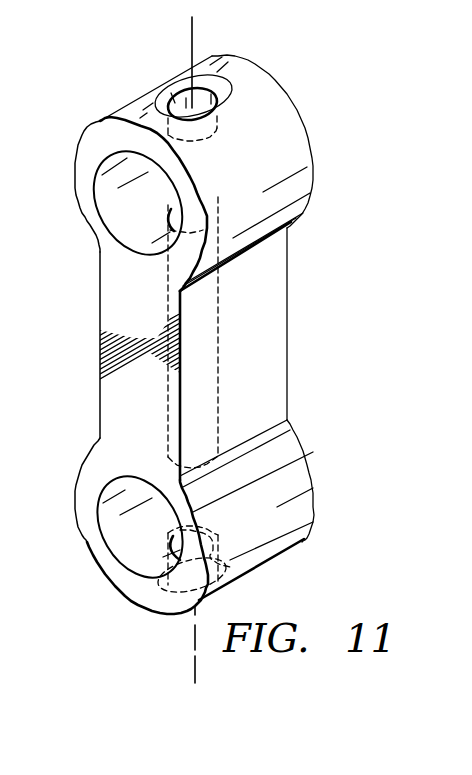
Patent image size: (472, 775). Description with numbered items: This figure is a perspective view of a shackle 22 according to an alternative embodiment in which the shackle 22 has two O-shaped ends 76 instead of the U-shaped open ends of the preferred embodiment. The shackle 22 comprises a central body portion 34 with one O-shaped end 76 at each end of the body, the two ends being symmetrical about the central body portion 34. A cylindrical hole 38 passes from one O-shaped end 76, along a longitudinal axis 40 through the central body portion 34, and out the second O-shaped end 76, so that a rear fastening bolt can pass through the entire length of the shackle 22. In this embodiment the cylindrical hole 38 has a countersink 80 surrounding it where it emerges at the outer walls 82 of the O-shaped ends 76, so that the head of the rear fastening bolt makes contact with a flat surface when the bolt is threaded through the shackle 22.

The shackle 22 is at (330, 322).
The central body portion 34 is at (107, 350).
The cylindrical hole 38 is at (168, 205).
The longitudinal axis 40 is at (192, 36).
The O-shaped ends 76 is at (80, 166).
The countersink 80 is at (222, 90).
The outer walls 82 is at (143, 103).